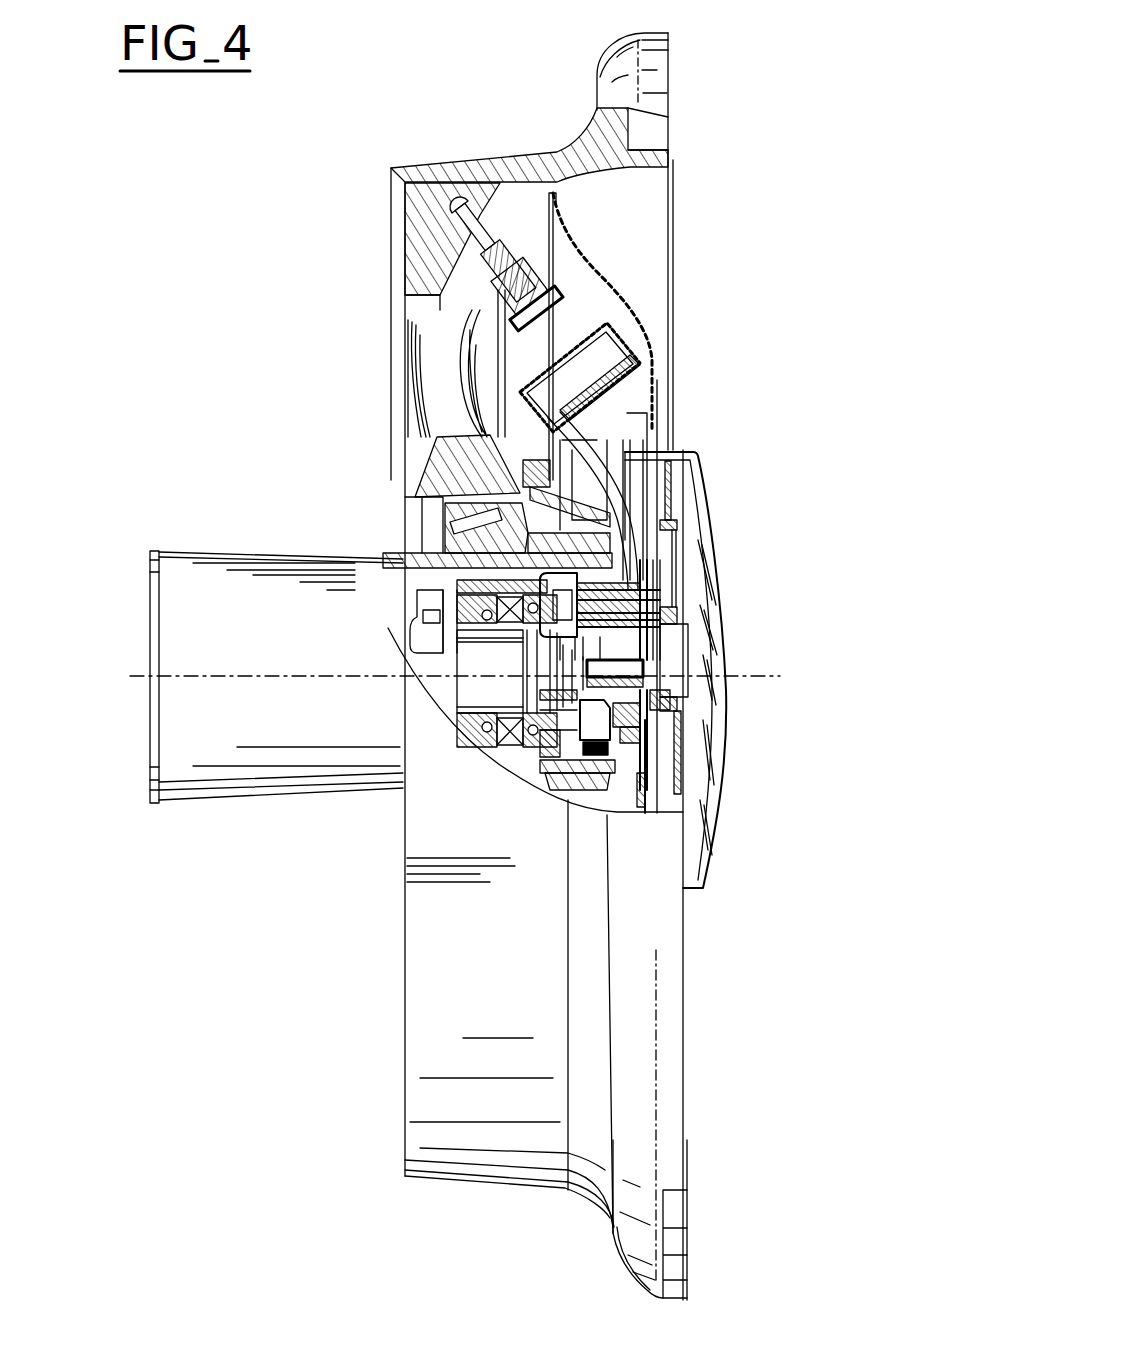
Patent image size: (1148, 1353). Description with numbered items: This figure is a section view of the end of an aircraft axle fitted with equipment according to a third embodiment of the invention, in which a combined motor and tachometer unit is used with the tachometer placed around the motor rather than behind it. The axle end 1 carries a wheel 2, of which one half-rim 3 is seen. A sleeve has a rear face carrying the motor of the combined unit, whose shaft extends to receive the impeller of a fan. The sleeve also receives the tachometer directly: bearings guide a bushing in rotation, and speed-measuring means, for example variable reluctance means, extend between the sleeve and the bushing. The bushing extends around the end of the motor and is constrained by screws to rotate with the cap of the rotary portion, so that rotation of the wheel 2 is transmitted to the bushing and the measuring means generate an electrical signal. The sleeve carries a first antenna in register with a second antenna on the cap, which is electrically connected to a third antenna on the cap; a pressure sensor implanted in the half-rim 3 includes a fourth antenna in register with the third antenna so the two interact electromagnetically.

The axle end 1 is at (310, 603).
The wheel 2 is at (558, 122).
The half-rim 3 is at (470, 173).